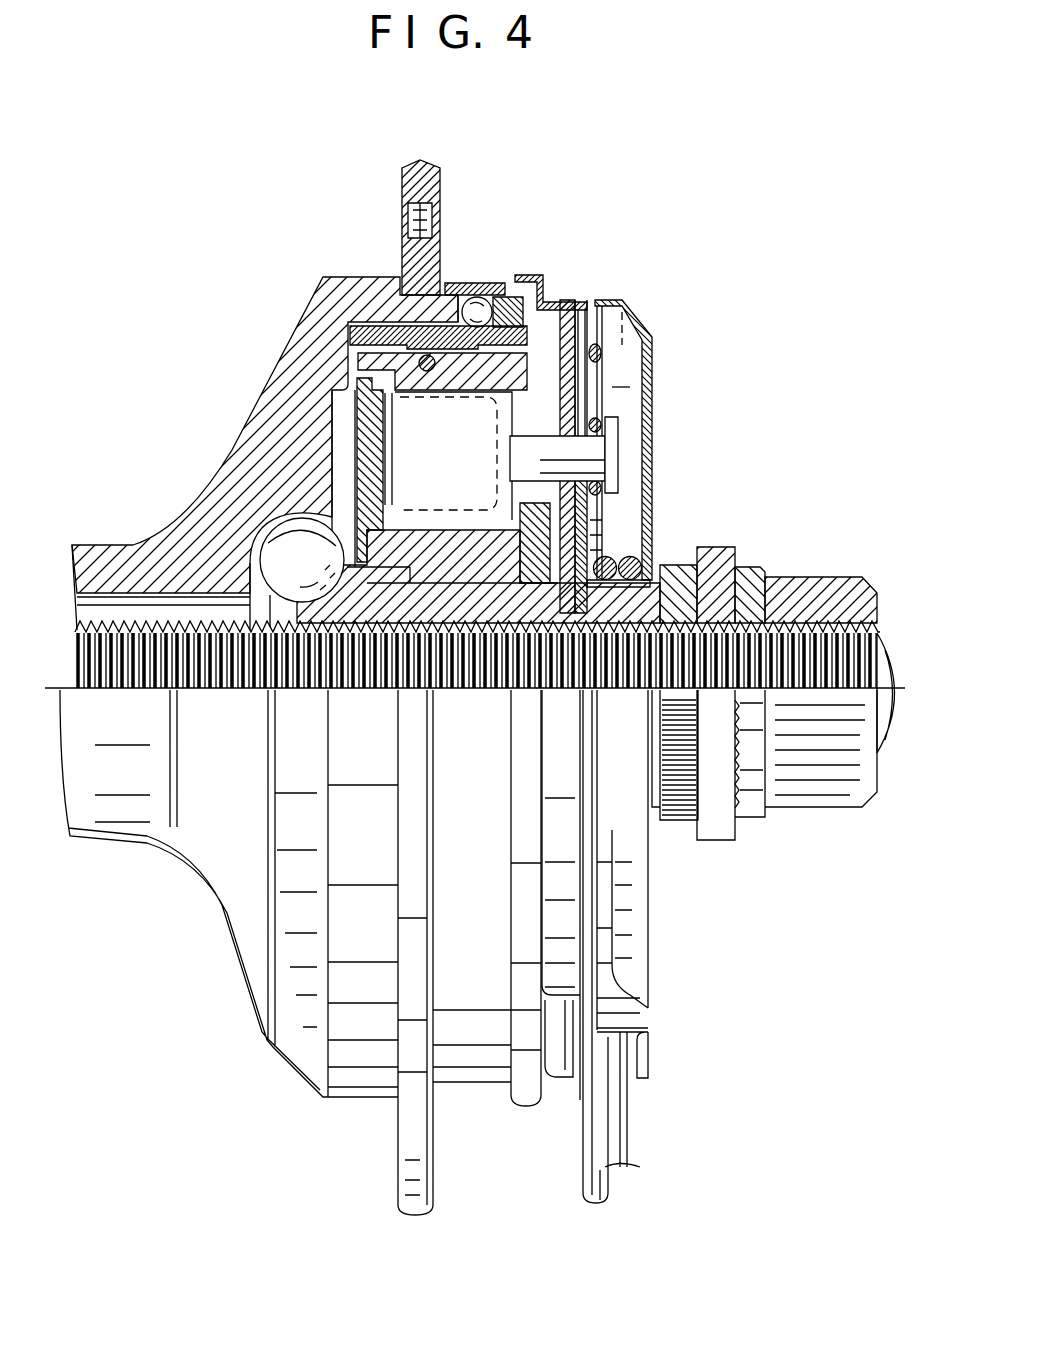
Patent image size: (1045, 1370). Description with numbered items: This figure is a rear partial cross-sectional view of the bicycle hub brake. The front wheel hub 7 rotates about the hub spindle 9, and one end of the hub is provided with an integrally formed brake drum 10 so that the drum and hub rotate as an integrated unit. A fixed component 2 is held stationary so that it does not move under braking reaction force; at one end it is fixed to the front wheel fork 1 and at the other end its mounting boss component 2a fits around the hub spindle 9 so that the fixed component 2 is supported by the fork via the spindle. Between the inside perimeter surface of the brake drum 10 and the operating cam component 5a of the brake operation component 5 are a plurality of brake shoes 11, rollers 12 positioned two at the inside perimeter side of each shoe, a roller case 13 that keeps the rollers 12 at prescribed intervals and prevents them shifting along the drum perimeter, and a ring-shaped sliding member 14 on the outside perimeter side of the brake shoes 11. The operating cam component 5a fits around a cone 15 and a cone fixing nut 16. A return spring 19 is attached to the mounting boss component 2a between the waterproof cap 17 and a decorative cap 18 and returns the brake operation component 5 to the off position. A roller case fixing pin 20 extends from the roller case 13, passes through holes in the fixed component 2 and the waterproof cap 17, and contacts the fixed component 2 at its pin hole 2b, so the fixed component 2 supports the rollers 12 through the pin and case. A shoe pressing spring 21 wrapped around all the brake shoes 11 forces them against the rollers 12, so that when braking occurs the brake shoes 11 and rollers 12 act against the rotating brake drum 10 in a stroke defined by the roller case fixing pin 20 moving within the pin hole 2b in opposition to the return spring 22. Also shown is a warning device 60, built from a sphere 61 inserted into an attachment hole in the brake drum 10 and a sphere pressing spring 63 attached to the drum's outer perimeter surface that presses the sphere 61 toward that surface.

The front wheel fork 1 is at (723, 547).
The fixed component 2 is at (567, 393).
The mounting boss component 2a is at (578, 625).
The pin hole 2b is at (562, 440).
The brake operation component 5 is at (541, 525).
The operating cam component 5a is at (440, 515).
The front wheel hub 7 is at (277, 340).
The hub spindle 9 is at (110, 612).
The brake drum 10 is at (400, 260).
The brake shoes 11 is at (602, 360).
The rollers 12 is at (405, 432).
The roller case 13 is at (348, 413).
The sliding member 14 is at (598, 330).
The cone 15 is at (365, 612).
The cone fixing nut 16 is at (487, 620).
The waterproof cap 17 is at (540, 276).
The decorative cap 18 is at (612, 300).
The return spring 19 is at (630, 552).
The roller case fixing pin 20 is at (613, 444).
The shoe pressing spring 21 is at (427, 373).
The return spring 22 is at (603, 492).
The warning device 60 is at (487, 264).
The sphere 61 is at (465, 294).
The sphere pressing spring 63 is at (500, 290).